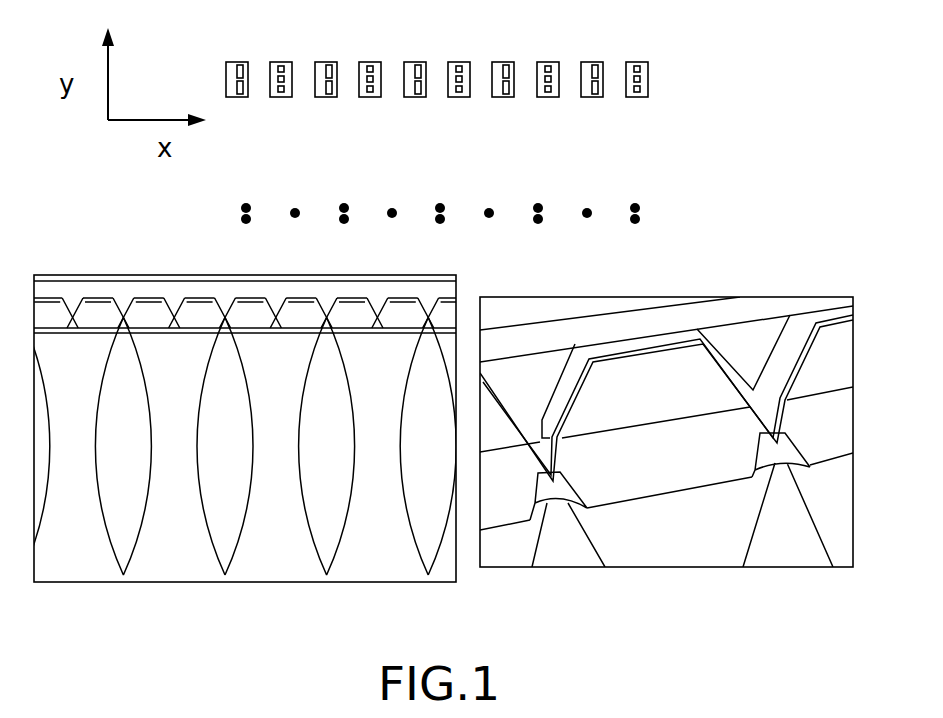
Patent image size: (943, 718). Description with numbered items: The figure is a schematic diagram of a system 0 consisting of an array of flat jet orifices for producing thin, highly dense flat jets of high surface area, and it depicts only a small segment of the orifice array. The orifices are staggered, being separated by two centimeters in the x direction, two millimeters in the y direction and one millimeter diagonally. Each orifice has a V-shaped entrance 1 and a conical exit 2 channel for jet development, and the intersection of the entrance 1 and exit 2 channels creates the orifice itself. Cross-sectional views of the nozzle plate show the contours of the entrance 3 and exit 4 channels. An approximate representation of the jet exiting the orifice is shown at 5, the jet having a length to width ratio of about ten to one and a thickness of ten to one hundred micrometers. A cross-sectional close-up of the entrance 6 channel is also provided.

The system 0 is at (446, 23).
The V-shaped entrance channel 1 is at (381, 63).
The conical exit channel 2 is at (392, 205).
The entrance channel contour 3 is at (245, 292).
The exit channel contour 4 is at (250, 315).
The jet representation 5 is at (182, 404).
The entrance channel close-up 6 is at (537, 399).